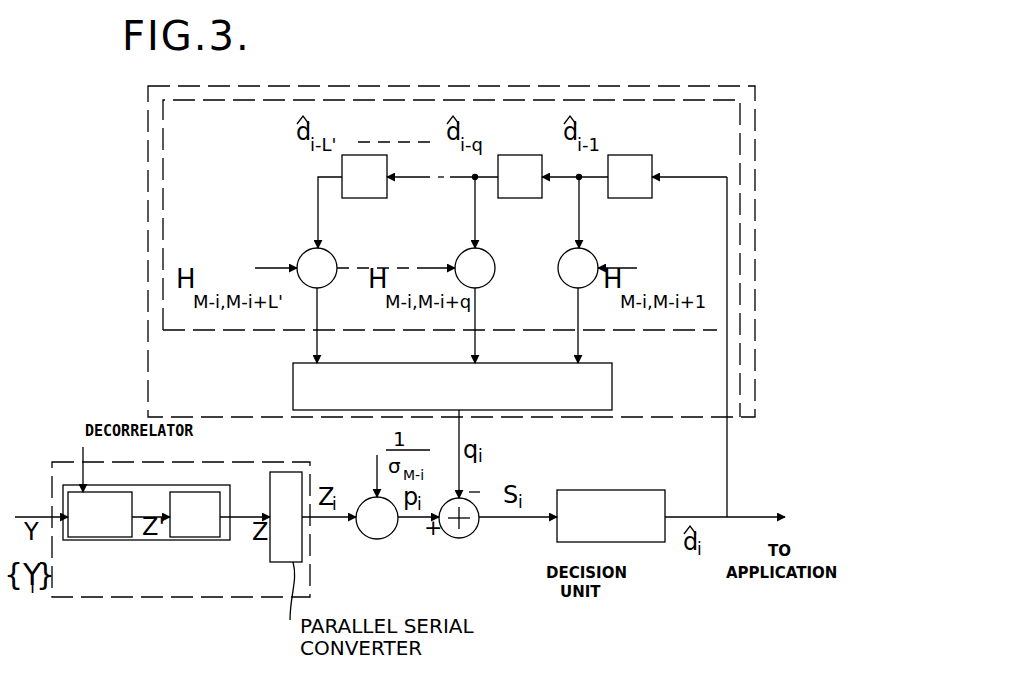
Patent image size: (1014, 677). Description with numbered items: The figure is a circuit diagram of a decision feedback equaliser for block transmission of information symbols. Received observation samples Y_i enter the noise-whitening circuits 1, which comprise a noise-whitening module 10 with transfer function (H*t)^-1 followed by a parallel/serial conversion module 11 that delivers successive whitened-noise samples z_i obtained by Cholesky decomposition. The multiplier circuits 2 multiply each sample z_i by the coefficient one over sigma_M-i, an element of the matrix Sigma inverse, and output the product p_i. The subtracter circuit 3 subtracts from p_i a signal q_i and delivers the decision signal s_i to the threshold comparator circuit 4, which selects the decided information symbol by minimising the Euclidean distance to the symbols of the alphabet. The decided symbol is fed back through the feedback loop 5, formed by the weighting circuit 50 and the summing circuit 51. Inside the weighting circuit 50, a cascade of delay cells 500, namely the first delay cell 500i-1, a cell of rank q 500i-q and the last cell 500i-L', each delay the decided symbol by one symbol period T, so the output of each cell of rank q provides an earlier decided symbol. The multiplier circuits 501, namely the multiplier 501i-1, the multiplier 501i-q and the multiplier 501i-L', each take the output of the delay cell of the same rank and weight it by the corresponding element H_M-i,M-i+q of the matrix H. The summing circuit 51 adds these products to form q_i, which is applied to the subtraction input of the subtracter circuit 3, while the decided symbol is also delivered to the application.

The noise-whitening circuits 1 is at (280, 462).
The multiplier circuits 2 is at (382, 539).
The subtracter circuit 3 is at (462, 538).
The threshold comparator circuit 4 is at (604, 490).
The feedback loop 5 is at (148, 355).
The noise-whitening module 10 is at (160, 540).
The parallel/serial conversion module 11 is at (274, 562).
The weighting circuit 50 is at (163, 155).
The summing circuit 51 is at (293, 388).
The delay cells 500 is at (529, 198).
The delay cell 500i-L' is at (391, 198).
The delay cell 500i-q is at (513, 198).
The delay cell 500i-1 is at (628, 198).
The multiplier circuits 501 is at (408, 271).
The multiplier circuit 501i-L' is at (278, 252).
The multiplier circuit 501i-q is at (458, 262).
The multiplier circuit 501i-1 is at (562, 283).